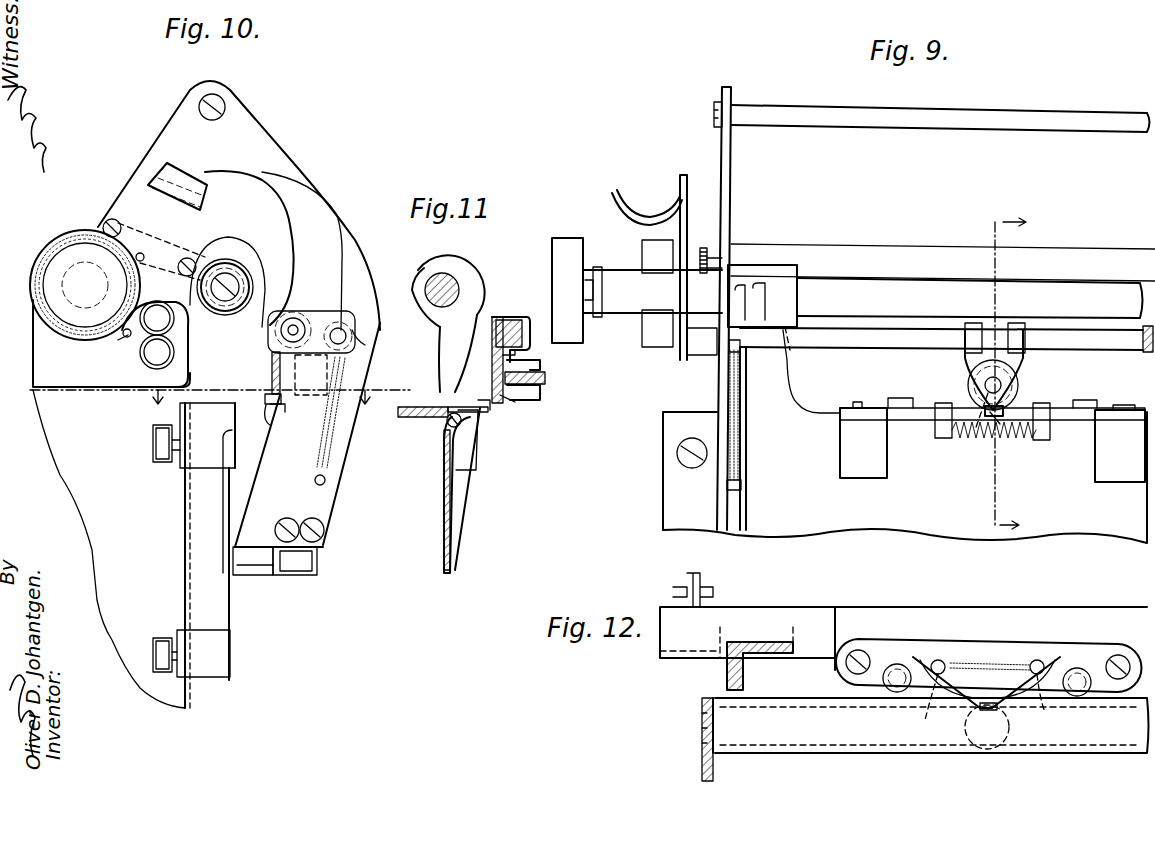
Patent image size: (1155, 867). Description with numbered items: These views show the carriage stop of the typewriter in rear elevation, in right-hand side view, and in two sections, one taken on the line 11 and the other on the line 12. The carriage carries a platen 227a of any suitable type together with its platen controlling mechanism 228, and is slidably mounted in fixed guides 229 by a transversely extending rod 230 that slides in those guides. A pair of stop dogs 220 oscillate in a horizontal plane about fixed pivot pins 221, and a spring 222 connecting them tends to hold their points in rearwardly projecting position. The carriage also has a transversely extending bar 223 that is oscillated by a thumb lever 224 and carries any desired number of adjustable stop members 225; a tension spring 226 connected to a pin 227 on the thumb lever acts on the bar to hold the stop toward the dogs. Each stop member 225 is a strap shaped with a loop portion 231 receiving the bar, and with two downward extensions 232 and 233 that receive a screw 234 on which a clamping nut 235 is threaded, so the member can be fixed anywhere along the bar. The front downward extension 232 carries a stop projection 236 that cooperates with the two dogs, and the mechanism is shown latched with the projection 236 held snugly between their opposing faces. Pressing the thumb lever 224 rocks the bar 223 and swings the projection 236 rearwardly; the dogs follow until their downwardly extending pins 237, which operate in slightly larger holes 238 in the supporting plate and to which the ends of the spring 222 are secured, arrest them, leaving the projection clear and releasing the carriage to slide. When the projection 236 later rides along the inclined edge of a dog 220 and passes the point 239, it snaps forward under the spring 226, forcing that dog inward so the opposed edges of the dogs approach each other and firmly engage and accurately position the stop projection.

In FIG. 9, the section line 11— 11 is at (1004, 376).
In FIG. 10, the section line 12— 12 is at (264, 379).
In FIG. 10, the stop dogs 220 is at (272, 428).
In FIG. 11, the stop dogs 220 is at (485, 412).
In FIG. 9, the stop dogs 220 is at (925, 408).
In FIG. 12, the stop dogs 220 is at (950, 690).
In FIG. 11, the fixed pivot pins 221 is at (450, 400).
In FIG. 9, the fixed pivot pins 221 is at (897, 398).
In FIG. 12, the fixed pivot pins 221 is at (900, 664).
In FIG. 11, the spring 222 is at (465, 420).
In FIG. 9, the spring 222 is at (1015, 435).
In FIG. 12, the spring 222 is at (998, 662).
In FIG. 11, the transversely extending bar 223 is at (508, 318).
In FIG. 9, the transversely extending bar 223 is at (1105, 348).
In FIG. 10, the thumb lever 224 is at (280, 200).
In FIG. 9, the thumb lever 224 is at (643, 212).
In FIG. 10, the adjustable stop members 225 is at (302, 312).
In FIG. 11, the adjustable stop members 225 is at (522, 348).
In FIG. 9, the adjustable stop members 225 is at (1025, 360).
In FIG. 10, the tension spring 226 is at (330, 470).
In FIG. 9, the tension spring 226 is at (729, 385).
In FIG. 10, the pin 227 is at (355, 330).
In FIG. 9, the pin 227 is at (740, 350).
In FIG. 9, the platen 227a is at (865, 256).
In FIG. 10, the platen controlling mechanism 228 is at (72, 240).
In FIG. 9, the platen controlling mechanism 228 is at (570, 231).
In FIG. 10, the fixed guides 229 is at (222, 340).
In FIG. 11, the fixed guides 229 is at (444, 325).
In FIG. 9, the fixed guides 229 is at (790, 262).
In FIG. 11, the transversely extending rod 230 is at (445, 275).
In FIG. 9, the transversely extending rod 230 is at (893, 292).
In FIG. 11, the loop portion 231 is at (528, 316).
In FIG. 10, the front downward extension 232 is at (230, 395).
In FIG. 11, the front downward extension 232 is at (492, 355).
In FIG. 11, the downward extension 233 is at (543, 365).
In FIG. 11, the screw 234 is at (512, 401).
In FIG. 9, the screw 234 is at (988, 400).
In FIG. 10, the clamping nut 235 is at (323, 372).
In FIG. 11, the clamping nut 235 is at (546, 380).
In FIG. 9, the clamping nut 235 is at (975, 380).
In FIG. 10, the stop projection 236 is at (280, 413).
In FIG. 11, the stop projection 236 is at (500, 410).
In FIG. 9, the stop projection 236 is at (997, 425).
In FIG. 12, the stop projection 236 is at (988, 712).
In FIG. 11, the downwardly extending pins 237 is at (466, 422).
In FIG. 9, the downwardly extending pins 237 is at (945, 440).
In FIG. 12, the downwardly extending pins 237 is at (935, 675).
In FIG. 9, the holes 238 is at (940, 420).
In FIG. 12, the holes 238 is at (998, 707).
In FIG. 12, the point 239 is at (985, 735).